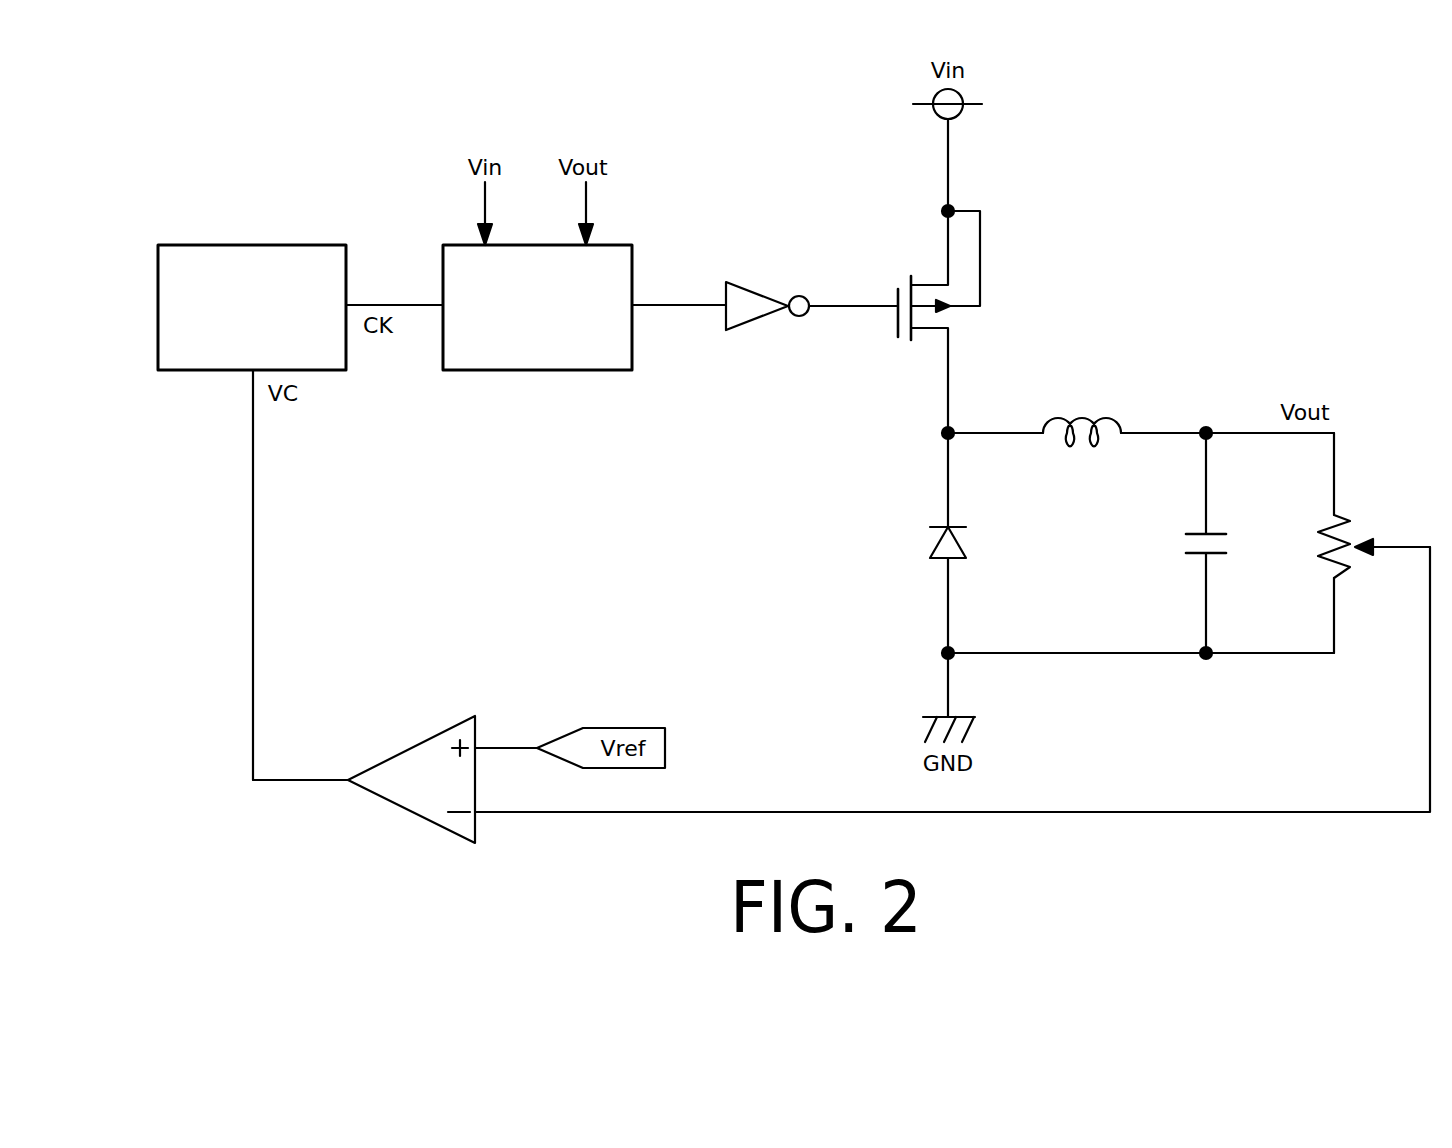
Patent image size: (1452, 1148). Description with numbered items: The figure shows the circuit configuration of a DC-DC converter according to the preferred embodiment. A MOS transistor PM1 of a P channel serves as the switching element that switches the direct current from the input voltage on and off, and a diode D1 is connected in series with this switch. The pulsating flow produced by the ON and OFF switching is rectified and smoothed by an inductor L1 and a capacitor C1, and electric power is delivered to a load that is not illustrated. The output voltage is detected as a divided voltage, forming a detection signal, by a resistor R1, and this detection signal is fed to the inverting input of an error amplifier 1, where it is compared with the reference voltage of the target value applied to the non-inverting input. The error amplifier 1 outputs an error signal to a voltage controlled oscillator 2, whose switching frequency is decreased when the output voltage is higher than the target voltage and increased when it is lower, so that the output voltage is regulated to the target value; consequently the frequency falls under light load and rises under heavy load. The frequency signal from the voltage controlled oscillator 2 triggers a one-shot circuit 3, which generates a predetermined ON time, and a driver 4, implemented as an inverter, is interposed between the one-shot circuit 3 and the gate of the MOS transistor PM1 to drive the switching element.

The error amplifier 1 is at (430, 740).
The voltage controlled oscillator 2 is at (248, 245).
The one-shot circuit 3 is at (567, 370).
The driver 4 is at (747, 282).
The MOS transistor of a P channel PM1 is at (898, 340).
The inductor L1 is at (1075, 415).
The diode D1 is at (967, 543).
The capacitor C1 is at (1226, 543).
The resistor R1 is at (1358, 520).